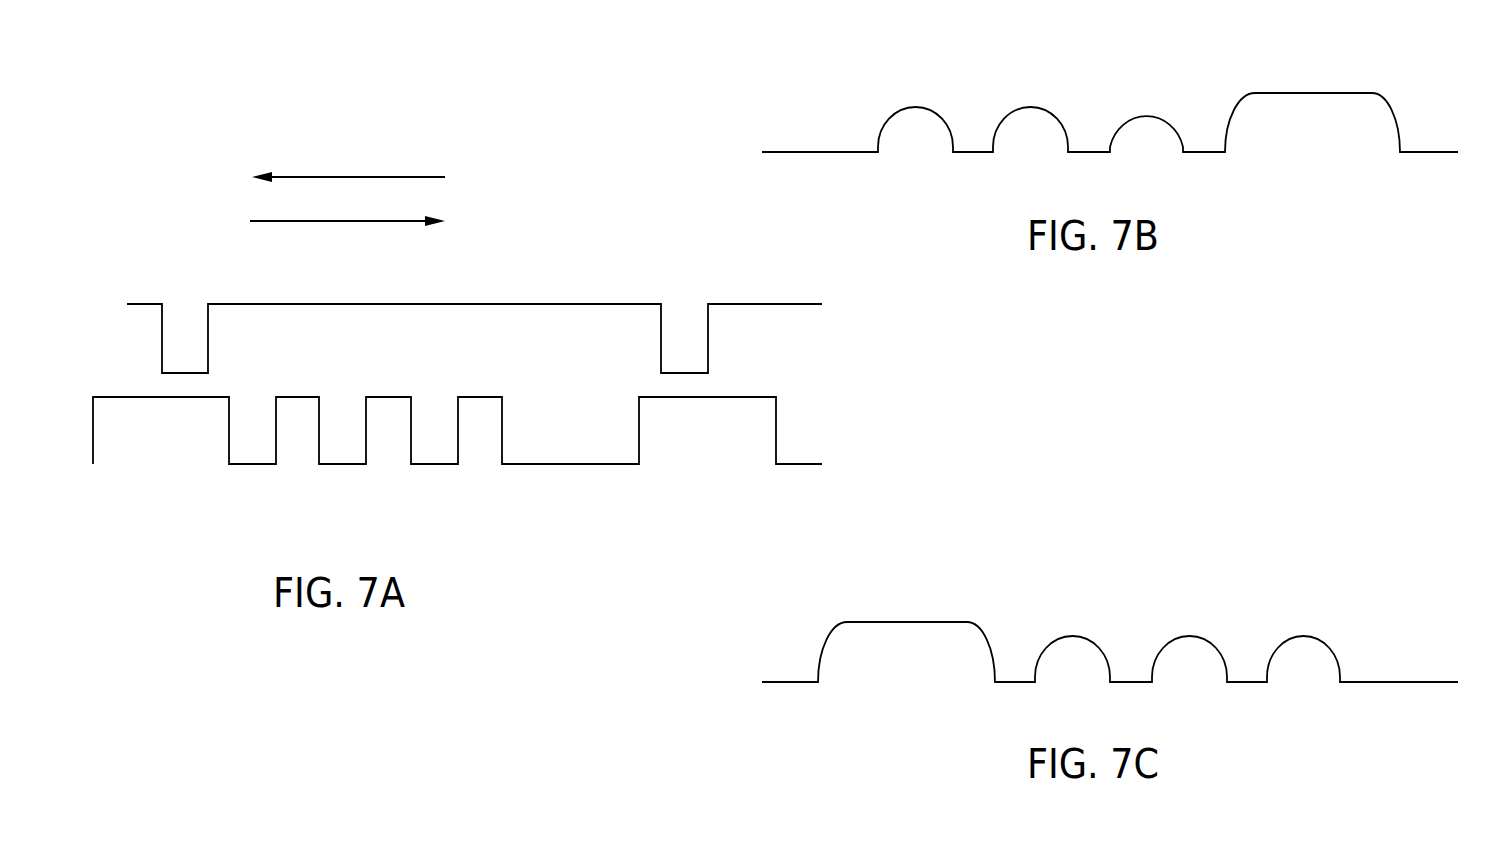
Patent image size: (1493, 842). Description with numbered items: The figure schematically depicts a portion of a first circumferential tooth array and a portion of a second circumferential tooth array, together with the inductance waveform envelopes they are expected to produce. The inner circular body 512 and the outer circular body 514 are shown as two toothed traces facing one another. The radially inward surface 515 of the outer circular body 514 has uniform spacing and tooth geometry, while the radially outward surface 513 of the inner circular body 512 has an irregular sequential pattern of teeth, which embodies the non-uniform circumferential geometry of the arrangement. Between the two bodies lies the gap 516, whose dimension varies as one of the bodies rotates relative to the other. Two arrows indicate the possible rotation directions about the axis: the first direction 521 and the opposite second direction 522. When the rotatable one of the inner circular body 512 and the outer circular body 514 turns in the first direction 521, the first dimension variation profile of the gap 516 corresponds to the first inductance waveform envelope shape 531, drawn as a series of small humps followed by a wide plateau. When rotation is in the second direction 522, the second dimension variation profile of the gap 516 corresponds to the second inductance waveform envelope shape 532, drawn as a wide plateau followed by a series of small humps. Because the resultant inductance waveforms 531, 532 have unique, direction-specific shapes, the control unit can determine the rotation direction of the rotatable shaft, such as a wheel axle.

In FIG. 7A, the inner circular body 512 is at (560, 500).
In FIG. 7A, the radially outward surface 513 is at (592, 464).
In FIG. 7A, the outer circular body 514 is at (532, 293).
In FIG. 7A, the radially inward surface 515 is at (568, 304).
In FIG. 7A, the gap 516 is at (585, 381).
In FIG. 7A, the first direction 521 is at (380, 177).
In FIG. 7A, the second direction 522 is at (288, 221).
In FIG. 7B, the first inductance waveform envelope shape 531 is at (791, 75).
In FIG. 7C, the second inductance waveform envelope shape 532 is at (798, 560).